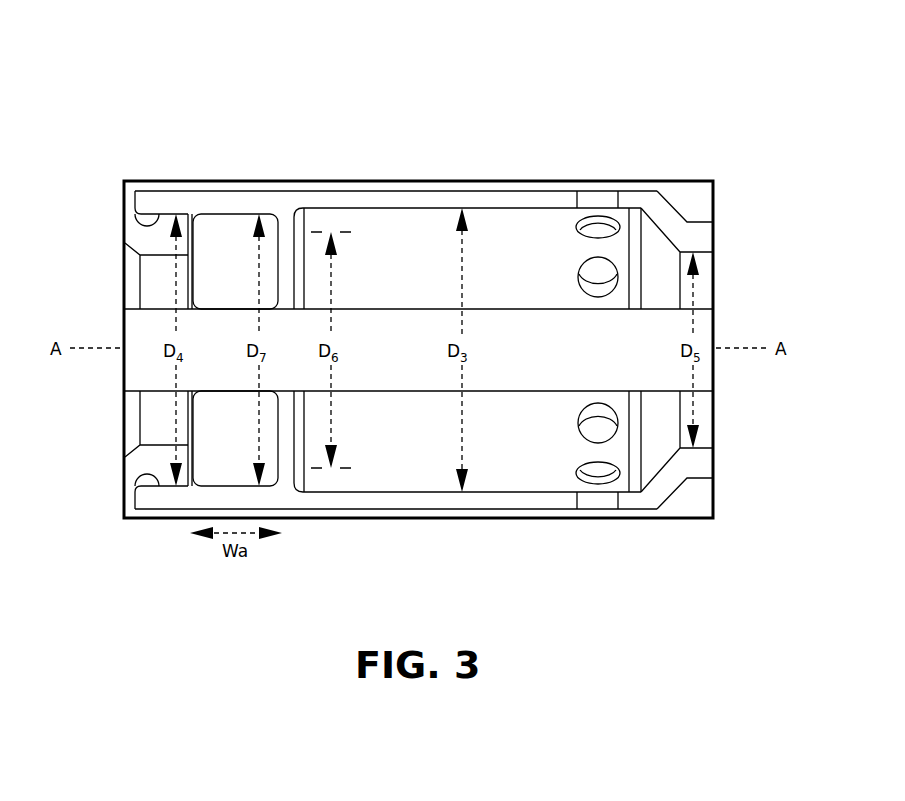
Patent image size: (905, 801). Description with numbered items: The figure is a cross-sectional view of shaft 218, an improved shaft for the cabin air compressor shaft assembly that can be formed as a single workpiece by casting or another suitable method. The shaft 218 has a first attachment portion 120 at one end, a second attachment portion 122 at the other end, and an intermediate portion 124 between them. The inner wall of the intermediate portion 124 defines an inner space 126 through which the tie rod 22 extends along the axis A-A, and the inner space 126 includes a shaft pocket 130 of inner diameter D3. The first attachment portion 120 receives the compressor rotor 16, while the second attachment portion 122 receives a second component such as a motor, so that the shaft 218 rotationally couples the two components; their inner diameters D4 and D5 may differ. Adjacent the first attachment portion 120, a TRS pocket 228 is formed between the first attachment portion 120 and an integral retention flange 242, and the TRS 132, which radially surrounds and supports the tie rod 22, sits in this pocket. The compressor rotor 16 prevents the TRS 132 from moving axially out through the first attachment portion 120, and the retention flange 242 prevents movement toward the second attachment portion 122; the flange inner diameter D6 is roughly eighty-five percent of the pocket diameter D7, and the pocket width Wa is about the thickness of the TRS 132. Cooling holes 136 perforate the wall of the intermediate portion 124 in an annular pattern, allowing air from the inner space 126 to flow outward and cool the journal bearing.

The shaft 218 is at (608, 81).
The first attachment portion 120 is at (158, 200).
The compressor rotor 16 is at (135, 466).
The TRS pocket 228 is at (227, 214).
The TRS 132 is at (235, 438).
The retention flange 242 is at (303, 222).
The intermediate portion 124 is at (442, 197).
The inner space 126 is at (386, 477).
The shaft pocket 130 is at (466, 258).
The second attachment portion 122 is at (700, 242).
The tie rod 22 is at (533, 391).
The cooling holes 136 is at (577, 472).